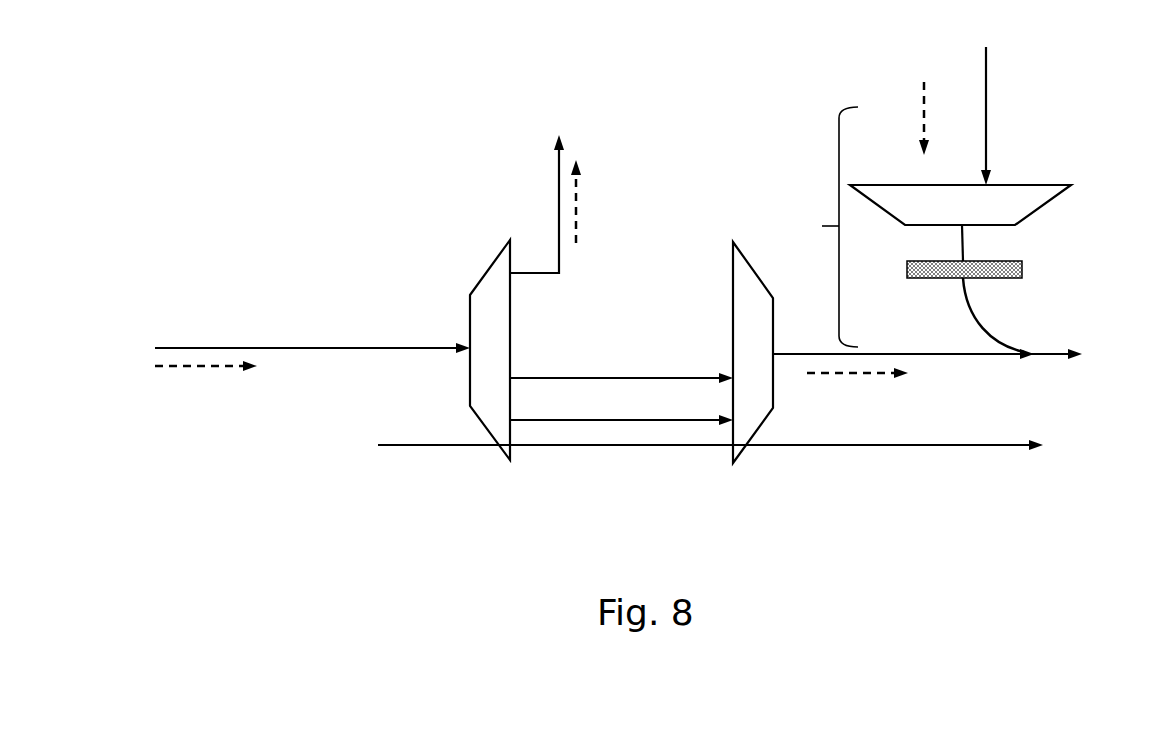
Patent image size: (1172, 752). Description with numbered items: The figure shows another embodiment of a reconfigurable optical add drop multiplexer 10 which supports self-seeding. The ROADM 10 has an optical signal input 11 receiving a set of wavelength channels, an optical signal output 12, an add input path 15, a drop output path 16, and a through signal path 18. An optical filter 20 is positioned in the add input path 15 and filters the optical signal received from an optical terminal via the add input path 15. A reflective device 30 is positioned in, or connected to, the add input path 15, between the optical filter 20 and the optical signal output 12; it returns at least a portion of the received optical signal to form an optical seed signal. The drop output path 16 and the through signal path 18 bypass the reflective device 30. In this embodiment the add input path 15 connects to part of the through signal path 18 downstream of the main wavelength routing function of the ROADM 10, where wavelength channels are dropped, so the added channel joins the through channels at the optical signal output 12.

The reconfigurable optical add drop multiplexer 10 is at (402, 108).
The optical signal input 11 is at (346, 348).
The optical signal output 12 is at (1038, 356).
The add input path 15 is at (961, 199).
The drop output path 16 is at (559, 222).
The through signal path 18 is at (592, 447).
The optical filter 20 is at (1071, 185).
The reflective device 30 is at (1022, 262).